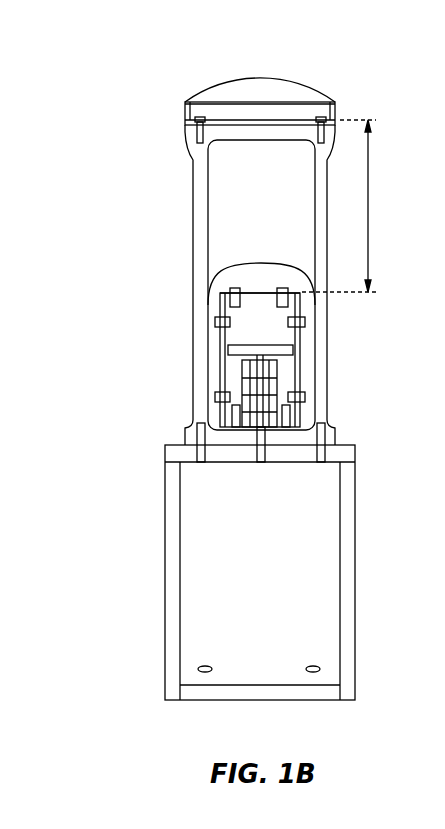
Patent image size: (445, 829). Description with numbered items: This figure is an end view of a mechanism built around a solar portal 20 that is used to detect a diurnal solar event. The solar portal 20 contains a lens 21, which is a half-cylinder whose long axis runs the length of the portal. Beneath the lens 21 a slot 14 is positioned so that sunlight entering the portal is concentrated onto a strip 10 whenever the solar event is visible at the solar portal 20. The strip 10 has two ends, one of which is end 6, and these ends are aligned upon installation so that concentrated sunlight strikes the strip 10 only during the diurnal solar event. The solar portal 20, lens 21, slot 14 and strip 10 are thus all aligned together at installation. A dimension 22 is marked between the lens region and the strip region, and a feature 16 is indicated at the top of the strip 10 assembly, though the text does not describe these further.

The solar portal 20 is at (293, 62).
The lens 21 is at (238, 80).
The upper section height 22 is at (368, 198).
The strip 10 is at (247, 345).
The slot 14 is at (260, 292).
The end of strip 6 is at (268, 292).
The top plate of unit 16 is at (245, 292).